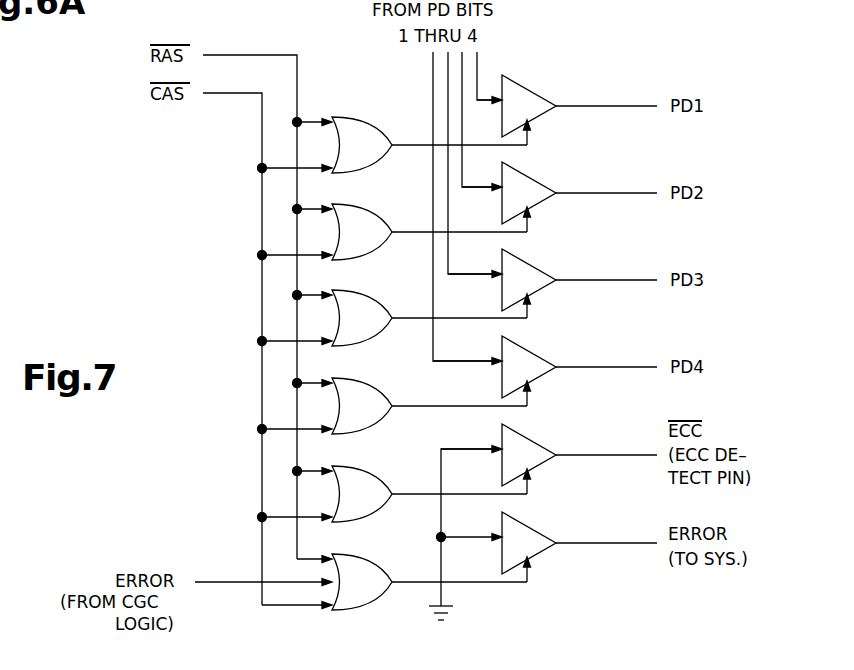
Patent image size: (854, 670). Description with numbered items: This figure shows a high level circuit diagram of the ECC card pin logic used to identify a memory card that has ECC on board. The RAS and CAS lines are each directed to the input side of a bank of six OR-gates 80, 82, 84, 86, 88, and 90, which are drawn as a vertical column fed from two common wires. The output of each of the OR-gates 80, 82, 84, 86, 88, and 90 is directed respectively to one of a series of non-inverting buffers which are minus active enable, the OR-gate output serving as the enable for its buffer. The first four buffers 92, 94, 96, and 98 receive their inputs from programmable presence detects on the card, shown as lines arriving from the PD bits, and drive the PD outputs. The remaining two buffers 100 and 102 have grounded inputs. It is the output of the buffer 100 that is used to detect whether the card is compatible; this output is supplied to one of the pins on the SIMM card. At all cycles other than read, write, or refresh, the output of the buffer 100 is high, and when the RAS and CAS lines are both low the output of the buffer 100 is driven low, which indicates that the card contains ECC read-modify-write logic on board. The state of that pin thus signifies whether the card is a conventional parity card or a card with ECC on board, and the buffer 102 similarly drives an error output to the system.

The OR-gate 80 is at (358, 167).
The OR-gate 82 is at (358, 254).
The OR-gate 84 is at (358, 340).
The OR-gate 86 is at (358, 428).
The OR-gate 88 is at (358, 516).
The OR-gate 90 is at (358, 604).
The non-inverting buffer 92 is at (538, 117).
The non-inverting buffer 94 is at (538, 204).
The non-inverting buffer 96 is at (538, 291).
The non-inverting buffer 98 is at (538, 378).
The non-inverting buffer 100 is at (538, 466).
The non-inverting buffer 102 is at (538, 554).